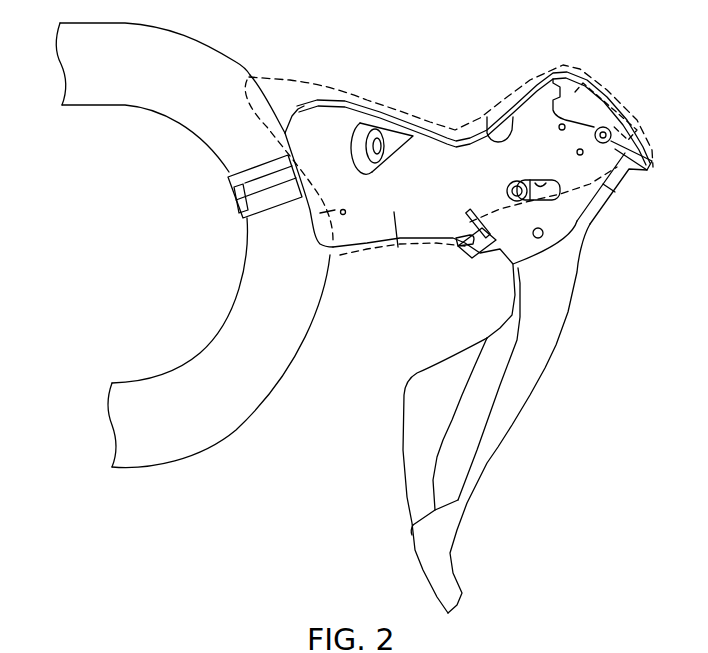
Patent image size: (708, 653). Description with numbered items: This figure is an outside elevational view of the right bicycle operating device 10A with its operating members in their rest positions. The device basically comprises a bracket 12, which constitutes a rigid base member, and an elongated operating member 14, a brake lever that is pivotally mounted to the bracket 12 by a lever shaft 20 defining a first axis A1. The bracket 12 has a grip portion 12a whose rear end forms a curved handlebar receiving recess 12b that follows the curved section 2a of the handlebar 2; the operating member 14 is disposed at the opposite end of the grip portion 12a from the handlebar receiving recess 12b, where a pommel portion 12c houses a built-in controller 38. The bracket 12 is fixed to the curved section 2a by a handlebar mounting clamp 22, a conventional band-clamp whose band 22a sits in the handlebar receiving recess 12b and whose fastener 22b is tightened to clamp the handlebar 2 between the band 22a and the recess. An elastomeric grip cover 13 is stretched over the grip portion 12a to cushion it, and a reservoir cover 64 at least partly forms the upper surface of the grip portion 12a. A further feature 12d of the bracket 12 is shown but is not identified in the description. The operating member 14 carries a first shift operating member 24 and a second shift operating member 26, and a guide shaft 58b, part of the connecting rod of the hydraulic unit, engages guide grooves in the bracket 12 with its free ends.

The handlebar 2 is at (122, 112).
The curved section 2a is at (249, 250).
The handlebar mounting clamp 22 is at (222, 188).
The band 22a is at (256, 161).
The fastener 22b is at (374, 135).
The grip cover 13 is at (298, 70).
The bracket 12 is at (467, 159).
The grip portion 12a is at (423, 246).
The handlebar receiving recess 12b is at (312, 221).
The pommel portion 12c is at (562, 70).
The hole of base member 12d is at (547, 179).
The reservoir cover 64 is at (477, 117).
The controller 38 is at (600, 83).
The bicycle operating device 10A is at (637, 89).
The guide shaft 58b is at (507, 186).
The first axis A1 is at (543, 233).
The lever shaft 20 is at (538, 239).
The operating member 14 is at (500, 383).
The first shift operating member 24 is at (468, 417).
The second shift operating member 26 is at (420, 452).